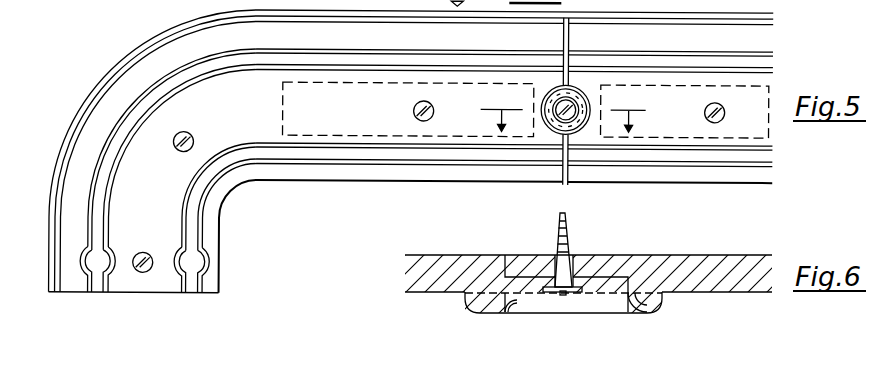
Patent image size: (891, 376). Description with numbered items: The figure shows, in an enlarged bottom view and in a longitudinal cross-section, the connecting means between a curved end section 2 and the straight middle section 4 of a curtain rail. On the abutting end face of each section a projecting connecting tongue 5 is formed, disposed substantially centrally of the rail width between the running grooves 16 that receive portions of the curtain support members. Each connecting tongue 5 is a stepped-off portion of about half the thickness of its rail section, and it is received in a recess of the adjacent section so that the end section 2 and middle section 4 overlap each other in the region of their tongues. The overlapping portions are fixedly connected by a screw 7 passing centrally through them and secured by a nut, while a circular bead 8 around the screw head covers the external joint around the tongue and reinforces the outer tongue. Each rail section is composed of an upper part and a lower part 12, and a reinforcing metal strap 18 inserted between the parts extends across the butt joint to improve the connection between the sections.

In FIG. 5, the end section 2 is at (229, 135).
In FIG. 6, the end section 2 is at (443, 283).
In FIG. 5, the middle section 4 is at (763, 123).
In FIG. 6, the middle section 4 is at (722, 285).
In FIG. 5, the connecting tongue 5 is at (545, 130).
In FIG. 6, the connecting tongue 5 is at (518, 267).
In FIG. 5, the screw 7 is at (571, 121).
In FIG. 6, the screw 7 is at (551, 289).
In FIG. 6, the circular bead 8 is at (645, 306).
In FIG. 6, the lower part 12 is at (593, 291).
In FIG. 5, the running grooves 16 is at (158, 97).
In FIG. 5, the reinforcing metal strap 18 is at (408, 137).